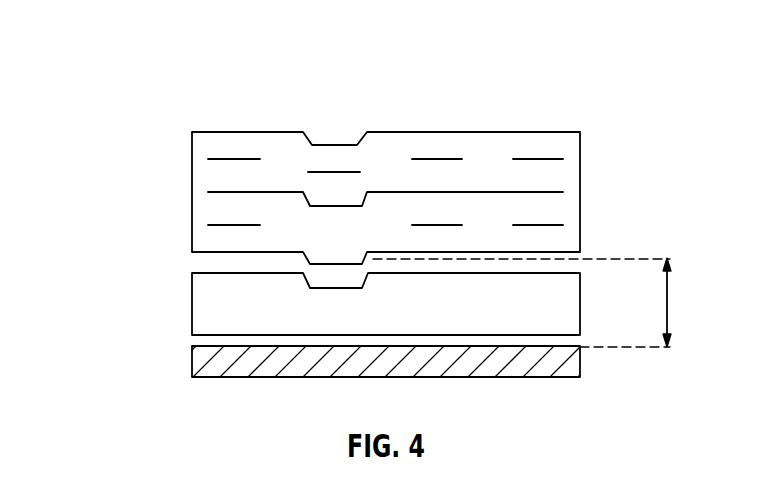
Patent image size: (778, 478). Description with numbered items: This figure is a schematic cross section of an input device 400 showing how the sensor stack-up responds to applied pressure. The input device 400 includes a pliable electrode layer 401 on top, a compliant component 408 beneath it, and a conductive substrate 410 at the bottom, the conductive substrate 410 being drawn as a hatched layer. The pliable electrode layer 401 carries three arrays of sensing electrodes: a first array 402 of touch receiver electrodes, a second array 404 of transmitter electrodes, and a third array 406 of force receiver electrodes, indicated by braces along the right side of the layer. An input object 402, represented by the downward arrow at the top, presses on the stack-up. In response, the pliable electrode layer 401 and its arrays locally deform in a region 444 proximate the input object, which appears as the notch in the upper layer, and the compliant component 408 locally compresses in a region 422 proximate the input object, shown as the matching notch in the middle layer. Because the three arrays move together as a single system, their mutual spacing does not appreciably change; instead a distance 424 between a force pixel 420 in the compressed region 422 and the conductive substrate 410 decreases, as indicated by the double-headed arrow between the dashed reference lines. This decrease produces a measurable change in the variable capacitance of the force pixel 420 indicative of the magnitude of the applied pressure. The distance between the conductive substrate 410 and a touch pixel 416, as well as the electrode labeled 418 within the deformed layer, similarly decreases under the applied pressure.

The input device 400 is at (106, 48).
The pliable electrode layer 401 is at (527, 132).
The first array of sensing electrodes / input object 402 is at (335, 120).
The second array of sensing electrodes 404 is at (592, 172).
The third array of sensing electrodes 406 is at (592, 212).
The compliant component 408 is at (192, 303).
The conductive substrate 410 is at (192, 362).
The touch pixel 416 is at (337, 172).
The second recess 418 is at (317, 203).
The force pixel 420 is at (335, 258).
The region of local compression 422 is at (364, 283).
The distance 424 is at (667, 302).
The region of local deformation 444 is at (357, 143).